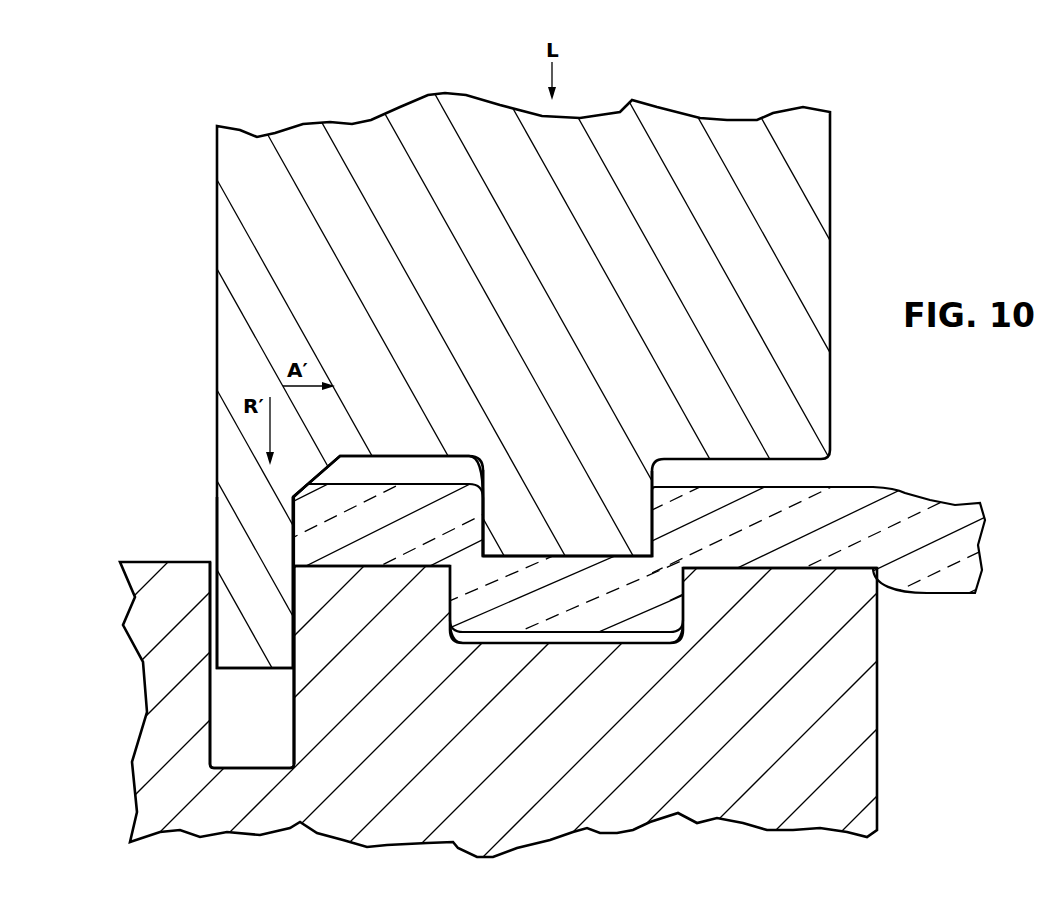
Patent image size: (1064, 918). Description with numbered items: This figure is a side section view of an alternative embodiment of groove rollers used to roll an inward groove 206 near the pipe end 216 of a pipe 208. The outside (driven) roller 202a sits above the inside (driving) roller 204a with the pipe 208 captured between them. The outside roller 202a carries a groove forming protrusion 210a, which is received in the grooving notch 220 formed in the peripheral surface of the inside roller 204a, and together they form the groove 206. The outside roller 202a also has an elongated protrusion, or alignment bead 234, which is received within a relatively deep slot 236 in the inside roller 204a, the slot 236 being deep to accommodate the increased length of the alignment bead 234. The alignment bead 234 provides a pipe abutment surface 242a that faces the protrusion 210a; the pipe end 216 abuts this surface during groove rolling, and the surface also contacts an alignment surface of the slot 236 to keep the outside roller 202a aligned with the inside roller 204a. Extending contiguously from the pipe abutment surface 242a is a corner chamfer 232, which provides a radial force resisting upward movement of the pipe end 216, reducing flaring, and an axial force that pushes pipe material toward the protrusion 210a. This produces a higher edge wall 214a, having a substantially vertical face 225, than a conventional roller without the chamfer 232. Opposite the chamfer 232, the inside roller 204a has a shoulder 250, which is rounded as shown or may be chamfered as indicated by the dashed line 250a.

The outside roller 202a is at (832, 268).
The inside roller 204a is at (618, 833).
The groove 206 is at (586, 557).
The pipe 208 is at (724, 560).
The groove forming protrusion 210a is at (568, 523).
The edge wall 214a is at (508, 485).
The pipe end 216 is at (302, 517).
The grooving notch 220 is at (566, 644).
The vertical face 225 is at (485, 527).
The corner chamfer 232 is at (333, 456).
The alignment bead 234 is at (257, 600).
The slot 236 is at (273, 747).
The pipe abutment surface 242a is at (297, 652).
The shoulder 250 is at (307, 560).
The chamfered shoulder 250a is at (330, 588).